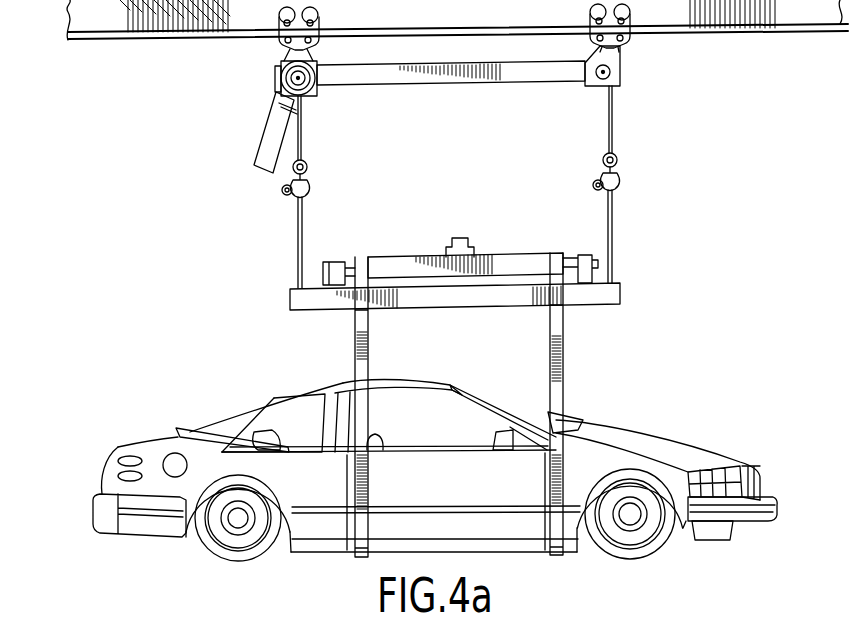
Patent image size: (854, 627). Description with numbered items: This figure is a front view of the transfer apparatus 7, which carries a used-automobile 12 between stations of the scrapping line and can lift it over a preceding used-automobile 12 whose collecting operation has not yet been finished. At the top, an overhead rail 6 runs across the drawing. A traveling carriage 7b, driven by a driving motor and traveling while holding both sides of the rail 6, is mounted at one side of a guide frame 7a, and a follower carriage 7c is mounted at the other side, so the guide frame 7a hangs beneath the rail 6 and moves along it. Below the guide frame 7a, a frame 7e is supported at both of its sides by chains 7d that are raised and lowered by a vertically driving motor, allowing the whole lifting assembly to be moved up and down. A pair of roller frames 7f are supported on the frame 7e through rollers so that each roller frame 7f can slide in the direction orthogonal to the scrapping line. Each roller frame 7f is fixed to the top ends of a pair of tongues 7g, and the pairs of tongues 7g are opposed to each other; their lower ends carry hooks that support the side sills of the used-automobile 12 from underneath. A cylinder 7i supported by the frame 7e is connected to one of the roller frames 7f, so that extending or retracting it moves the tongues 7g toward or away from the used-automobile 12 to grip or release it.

The rail 6 is at (348, 24).
The transfer apparatus 7 is at (216, 143).
The guide frame 7a is at (406, 78).
The traveling carriage 7b is at (282, 12).
The follower carriage 7c is at (622, 10).
The suspension cable with hook 7d is at (305, 161).
The frame 7e is at (598, 297).
The roller frame 7f is at (510, 258).
The tongue 7g is at (355, 352).
The cylinder 7i is at (461, 240).
The used-automobile 12 is at (672, 441).